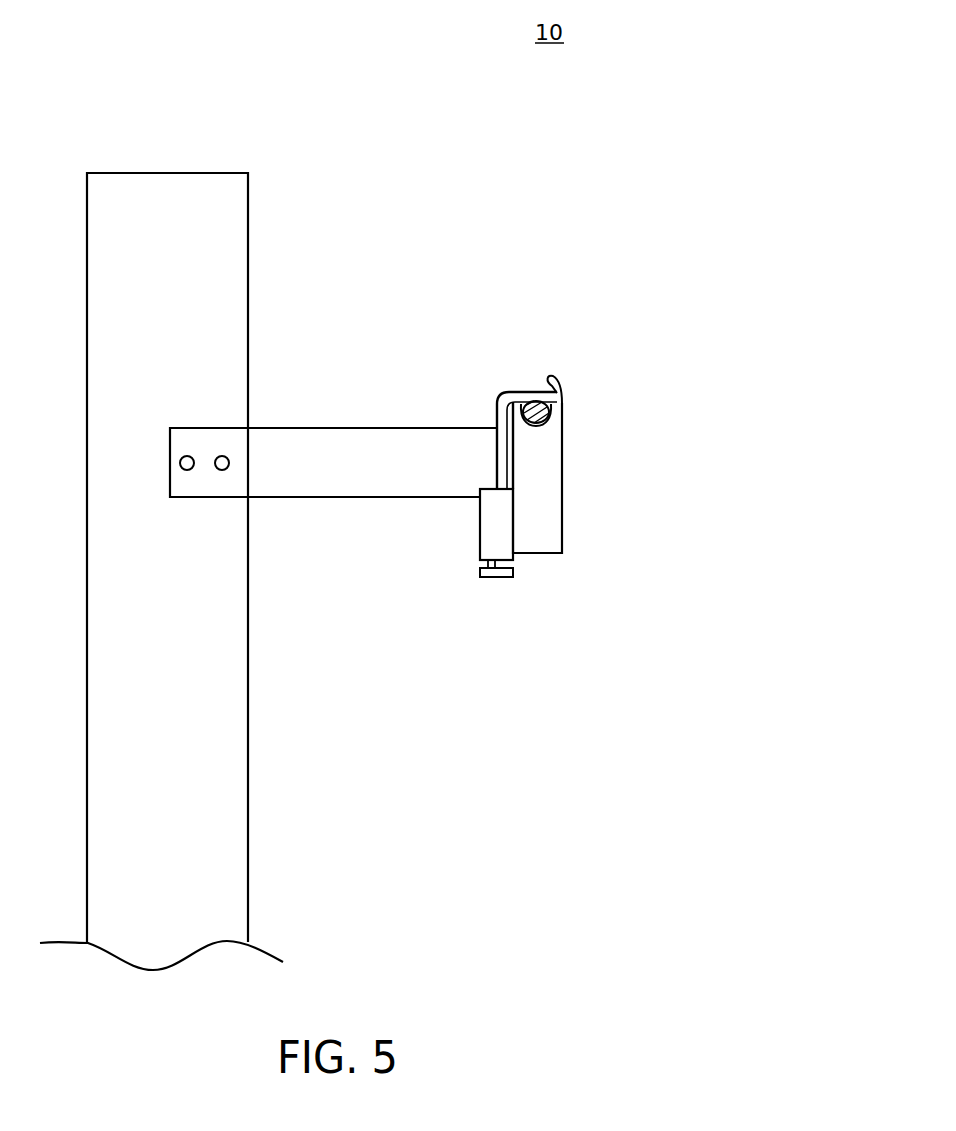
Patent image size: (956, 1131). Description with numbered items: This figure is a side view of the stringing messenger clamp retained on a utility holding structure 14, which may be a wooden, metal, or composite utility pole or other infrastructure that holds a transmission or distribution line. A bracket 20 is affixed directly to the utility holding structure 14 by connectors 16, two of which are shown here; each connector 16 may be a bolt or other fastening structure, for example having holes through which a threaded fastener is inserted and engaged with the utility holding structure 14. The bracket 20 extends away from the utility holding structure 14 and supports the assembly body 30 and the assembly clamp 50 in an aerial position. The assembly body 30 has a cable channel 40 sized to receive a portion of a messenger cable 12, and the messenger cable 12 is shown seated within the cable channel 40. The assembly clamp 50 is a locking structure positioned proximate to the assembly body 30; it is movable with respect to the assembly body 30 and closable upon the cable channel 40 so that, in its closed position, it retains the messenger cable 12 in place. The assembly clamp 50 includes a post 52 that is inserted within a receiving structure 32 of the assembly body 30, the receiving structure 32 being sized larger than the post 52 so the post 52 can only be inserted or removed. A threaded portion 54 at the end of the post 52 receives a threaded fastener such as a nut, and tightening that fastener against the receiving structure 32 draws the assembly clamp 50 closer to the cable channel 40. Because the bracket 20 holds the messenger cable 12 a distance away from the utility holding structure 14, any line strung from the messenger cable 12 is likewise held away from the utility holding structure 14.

The messenger cable 12 is at (548, 408).
The utility holding structure 14 is at (202, 782).
The connector 16 is at (228, 470).
The bracket 20 is at (340, 457).
The assembly body 30 is at (550, 530).
The receiving structure 32 is at (490, 530).
The cable channel 40 is at (545, 423).
The assembly clamp 50 is at (530, 393).
The post 52 is at (500, 455).
The threaded portion 54 is at (508, 573).